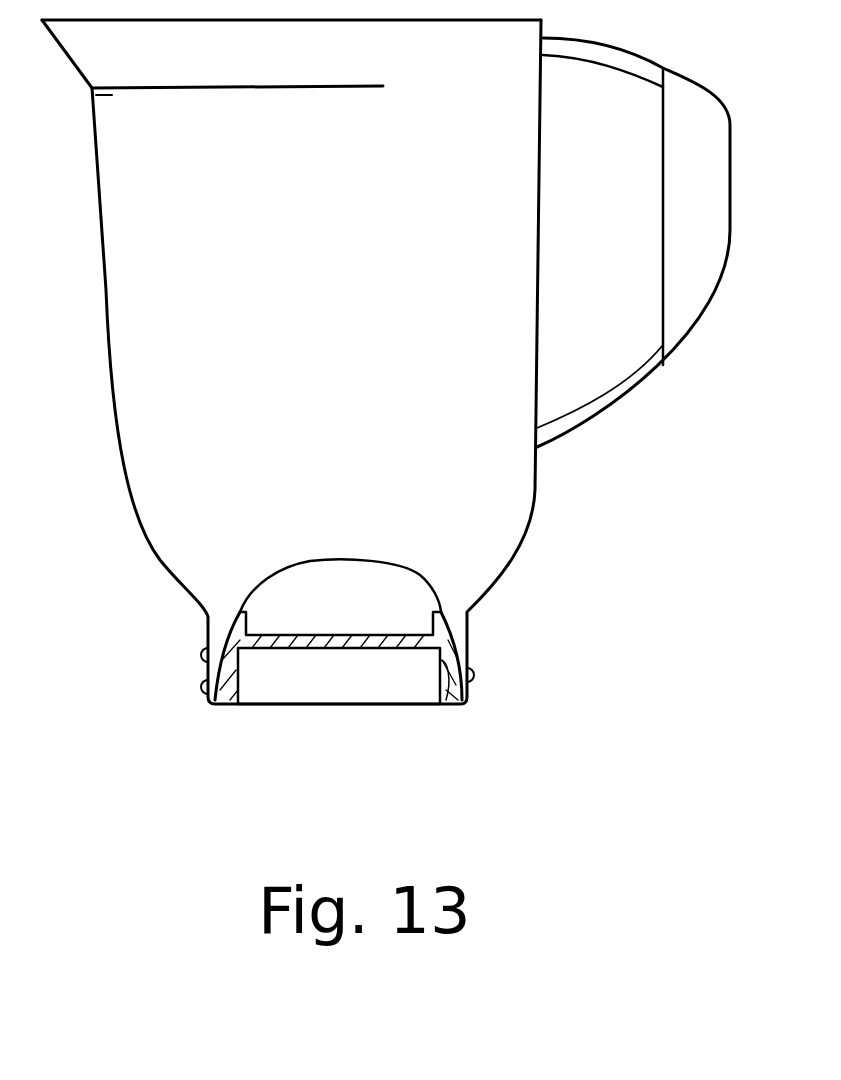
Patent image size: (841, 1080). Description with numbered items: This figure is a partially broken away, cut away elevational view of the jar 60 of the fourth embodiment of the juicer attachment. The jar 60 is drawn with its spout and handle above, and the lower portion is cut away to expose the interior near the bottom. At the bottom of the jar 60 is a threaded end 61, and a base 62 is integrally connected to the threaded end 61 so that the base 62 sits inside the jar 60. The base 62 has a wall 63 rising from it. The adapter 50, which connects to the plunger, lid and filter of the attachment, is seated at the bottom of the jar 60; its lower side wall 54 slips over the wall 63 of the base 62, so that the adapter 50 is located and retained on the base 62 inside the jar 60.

The adapter 50 is at (318, 578).
The lower side wall 54 is at (467, 615).
The jar 60 is at (510, 480).
The threaded end 61 is at (470, 690).
The base 62 is at (283, 678).
The wall 63 is at (432, 688).